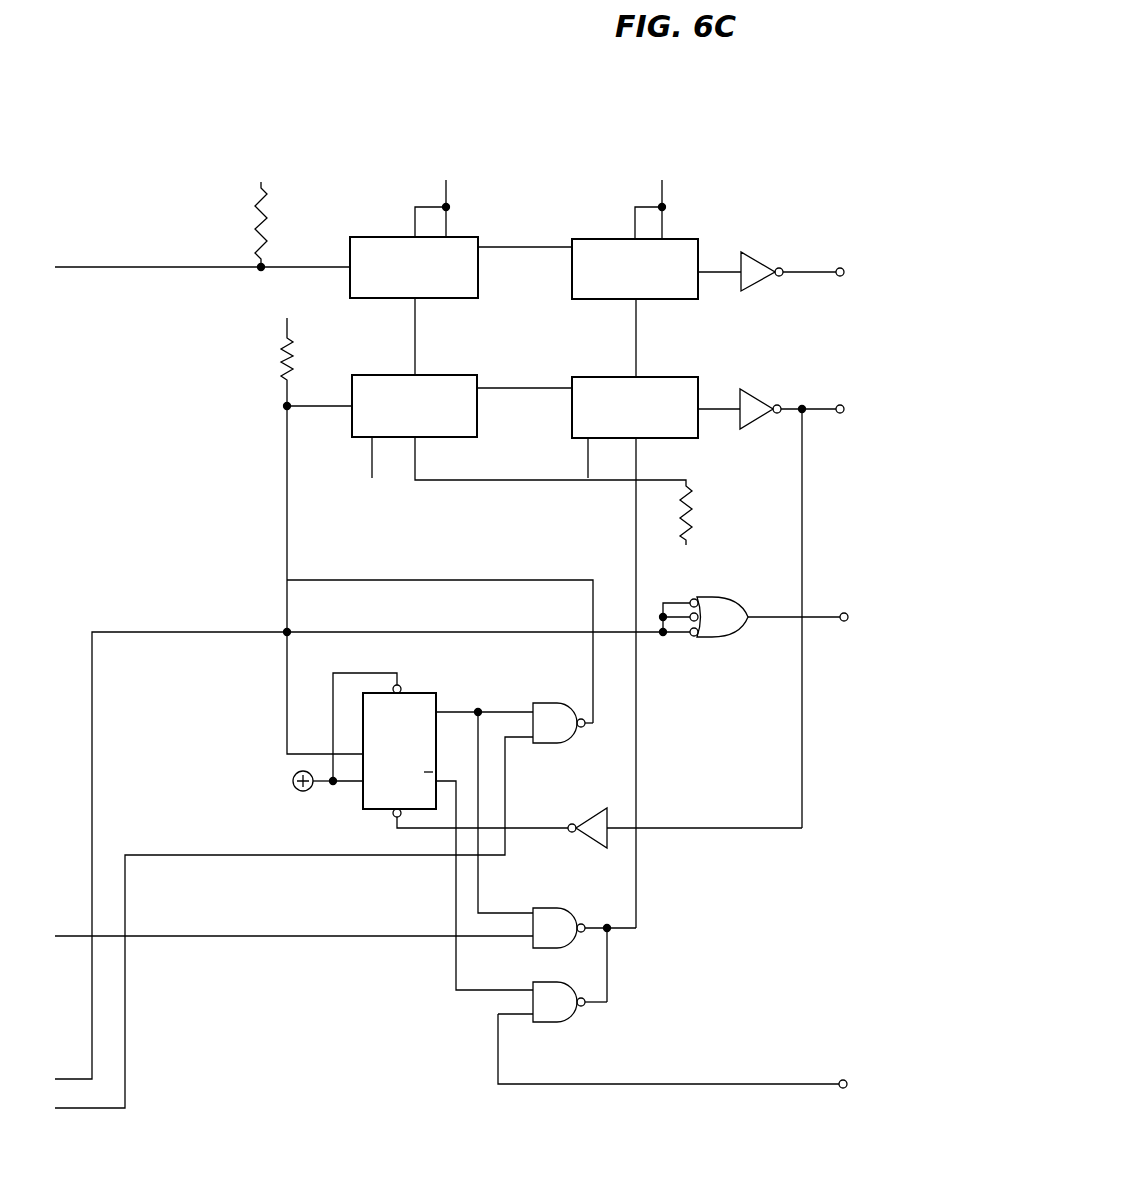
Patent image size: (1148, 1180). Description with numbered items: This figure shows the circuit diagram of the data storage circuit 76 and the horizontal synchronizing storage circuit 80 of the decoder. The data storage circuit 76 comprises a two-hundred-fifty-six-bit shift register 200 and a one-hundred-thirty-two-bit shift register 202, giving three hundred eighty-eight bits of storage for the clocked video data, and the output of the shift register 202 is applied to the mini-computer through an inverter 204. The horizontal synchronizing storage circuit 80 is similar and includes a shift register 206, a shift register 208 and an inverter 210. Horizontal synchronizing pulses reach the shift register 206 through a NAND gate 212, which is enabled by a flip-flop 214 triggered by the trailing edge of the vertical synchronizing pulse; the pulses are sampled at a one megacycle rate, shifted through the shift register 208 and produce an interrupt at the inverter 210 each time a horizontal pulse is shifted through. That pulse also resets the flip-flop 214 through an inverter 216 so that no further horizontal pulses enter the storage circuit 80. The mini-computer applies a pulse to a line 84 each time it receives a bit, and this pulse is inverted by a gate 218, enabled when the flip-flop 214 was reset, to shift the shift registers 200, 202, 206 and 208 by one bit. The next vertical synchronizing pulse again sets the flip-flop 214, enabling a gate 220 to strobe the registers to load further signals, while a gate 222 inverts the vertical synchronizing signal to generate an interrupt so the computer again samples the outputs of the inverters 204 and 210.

The data storage circuit 76 is at (509, 170).
The horizontal synchronizing storage circuit 80 is at (500, 460).
The line 84 is at (688, 1084).
The 256-bit shift register 200 is at (355, 237).
The 132-bit shift register 202 is at (592, 239).
The inverter 204 is at (748, 252).
The 256-bit shift register 206 is at (466, 375).
The 132-bit shift register 208 is at (600, 377).
The inverter 210 is at (752, 392).
The NAND gate 212 is at (548, 745).
The flip-flop 214 is at (363, 795).
The inverter 216 is at (588, 843).
The gate 218 is at (570, 1022).
The gate 220 is at (555, 908).
The gate 222 is at (728, 597).